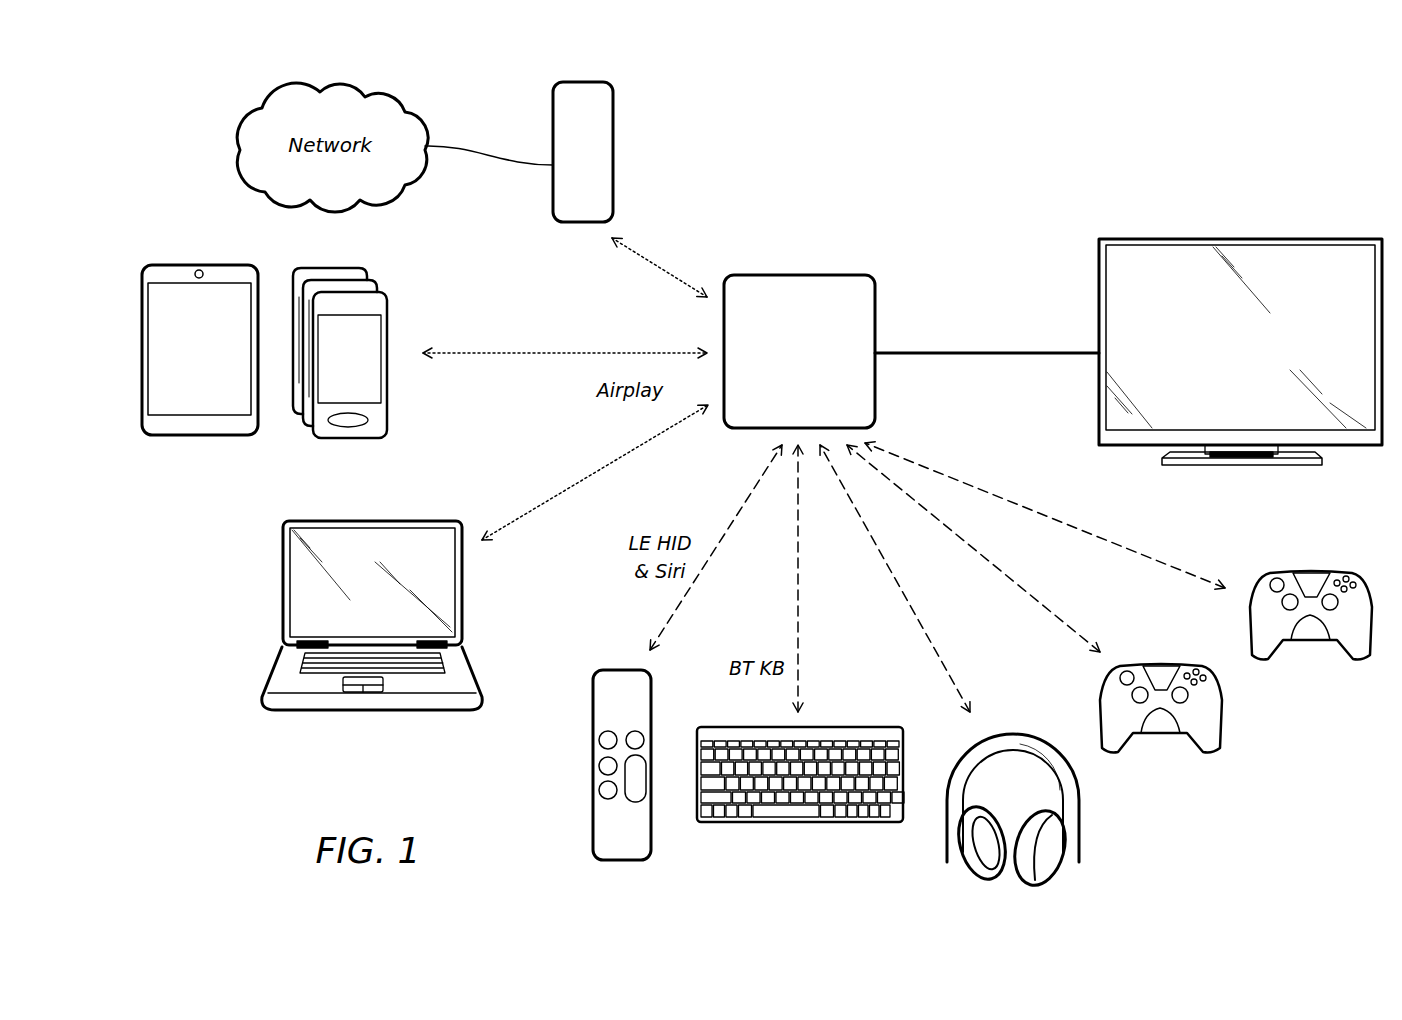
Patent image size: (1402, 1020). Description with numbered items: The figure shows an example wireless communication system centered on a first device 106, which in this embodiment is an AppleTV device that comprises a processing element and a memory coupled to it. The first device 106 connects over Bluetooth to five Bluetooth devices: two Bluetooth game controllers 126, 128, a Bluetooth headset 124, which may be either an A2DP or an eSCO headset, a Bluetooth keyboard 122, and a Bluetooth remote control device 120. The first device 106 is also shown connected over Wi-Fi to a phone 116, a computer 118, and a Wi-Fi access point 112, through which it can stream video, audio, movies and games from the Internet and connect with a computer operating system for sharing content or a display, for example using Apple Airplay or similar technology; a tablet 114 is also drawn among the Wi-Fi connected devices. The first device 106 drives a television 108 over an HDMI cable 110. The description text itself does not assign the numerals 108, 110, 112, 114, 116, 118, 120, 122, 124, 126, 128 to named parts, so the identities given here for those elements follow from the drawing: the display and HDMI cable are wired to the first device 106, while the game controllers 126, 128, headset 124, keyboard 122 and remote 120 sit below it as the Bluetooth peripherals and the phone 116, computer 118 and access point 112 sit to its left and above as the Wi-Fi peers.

The first device 106 is at (798, 275).
The television 108 is at (1247, 239).
The HDMI cable 110 is at (980, 355).
The network router 112 is at (585, 82).
The tablet computer 114 is at (198, 437).
The mobile phones 116 is at (350, 440).
The laptop computer 118 is at (370, 711).
The remote control 120 is at (612, 670).
The Bluetooth keyboard 122 is at (800, 823).
The headphones 124 is at (1002, 733).
The game controller 126 is at (1160, 734).
The game controller 128 is at (1310, 641).